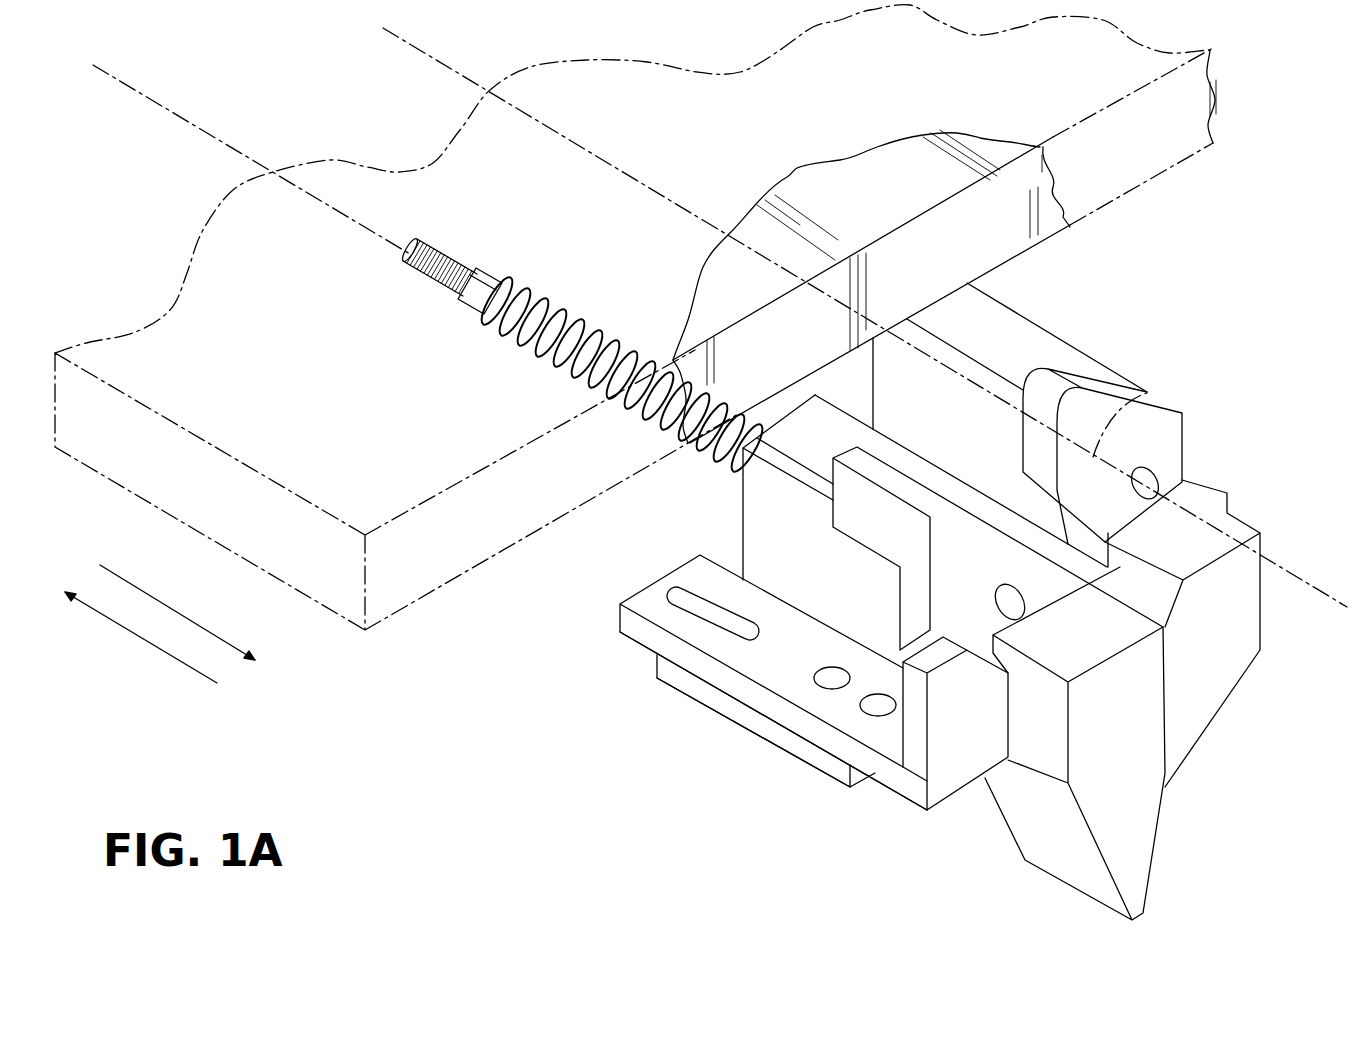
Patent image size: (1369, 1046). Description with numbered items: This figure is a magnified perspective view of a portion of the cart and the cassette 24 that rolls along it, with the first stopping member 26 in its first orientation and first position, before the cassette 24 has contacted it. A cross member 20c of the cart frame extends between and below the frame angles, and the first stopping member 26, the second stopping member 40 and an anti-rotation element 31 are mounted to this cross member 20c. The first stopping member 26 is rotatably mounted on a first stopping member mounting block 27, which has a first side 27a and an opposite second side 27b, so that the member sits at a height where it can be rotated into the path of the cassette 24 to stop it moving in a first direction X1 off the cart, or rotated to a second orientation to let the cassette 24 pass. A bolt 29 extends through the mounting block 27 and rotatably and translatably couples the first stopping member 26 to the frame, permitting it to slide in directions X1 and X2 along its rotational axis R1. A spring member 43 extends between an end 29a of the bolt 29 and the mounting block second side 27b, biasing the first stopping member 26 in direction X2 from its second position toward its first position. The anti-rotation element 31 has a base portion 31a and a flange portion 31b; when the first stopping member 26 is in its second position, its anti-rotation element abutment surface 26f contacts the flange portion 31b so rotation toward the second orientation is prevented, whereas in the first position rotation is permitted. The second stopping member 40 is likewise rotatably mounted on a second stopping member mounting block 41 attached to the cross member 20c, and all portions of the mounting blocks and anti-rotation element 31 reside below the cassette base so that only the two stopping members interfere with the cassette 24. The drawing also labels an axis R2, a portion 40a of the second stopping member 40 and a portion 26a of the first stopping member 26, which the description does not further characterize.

The rotational axis R1 is at (190, 125).
The second rotation axis R2 is at (1168, 402).
The first direction X1 is at (177, 612).
The second direction X2 is at (141, 637).
The cassette 24 is at (1007, 207).
The bolt 29 is at (458, 268).
The end of the bolt 29a is at (418, 292).
The spring member 43 is at (593, 332).
The second stopping member mounting block 41 is at (1007, 332).
The second stopping member 40 is at (1265, 630).
The hinge lug 40a is at (1104, 399).
The first stopping member 26 is at (1113, 757).
The rib of block 26a is at (898, 483).
The anti-rotation element abutment surface 26f is at (955, 626).
The first stopping member mounting block 27 is at (778, 555).
The first side of the mounting block 27a is at (1007, 517).
The second side of the mounting block 27b is at (743, 503).
The anti-rotation element 31 is at (890, 795).
The base portion 31a is at (817, 732).
The flange portion 31b is at (967, 727).
The cross member 20c is at (730, 707).